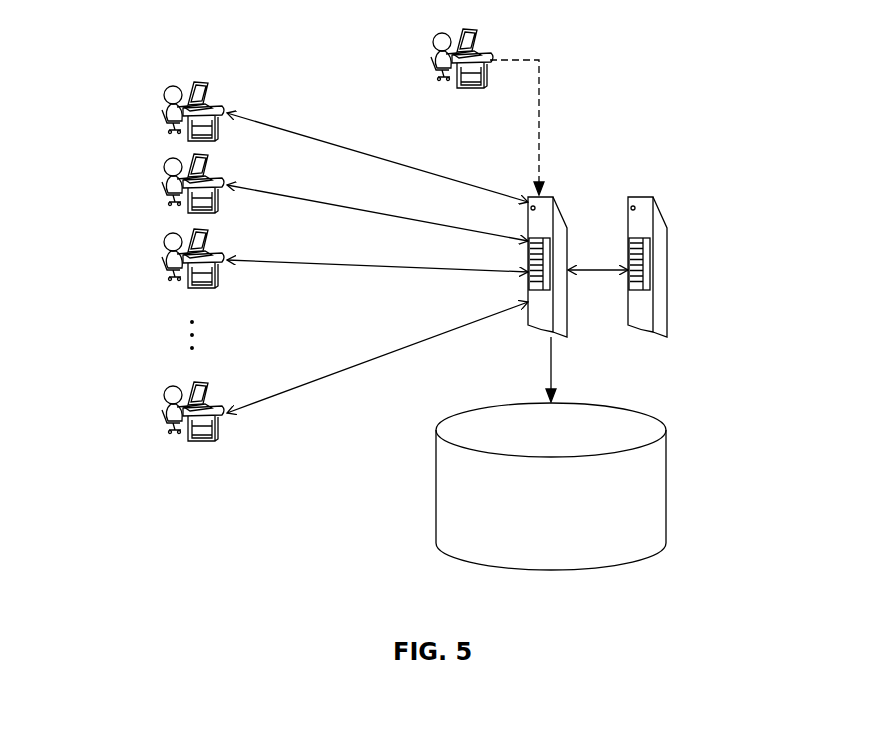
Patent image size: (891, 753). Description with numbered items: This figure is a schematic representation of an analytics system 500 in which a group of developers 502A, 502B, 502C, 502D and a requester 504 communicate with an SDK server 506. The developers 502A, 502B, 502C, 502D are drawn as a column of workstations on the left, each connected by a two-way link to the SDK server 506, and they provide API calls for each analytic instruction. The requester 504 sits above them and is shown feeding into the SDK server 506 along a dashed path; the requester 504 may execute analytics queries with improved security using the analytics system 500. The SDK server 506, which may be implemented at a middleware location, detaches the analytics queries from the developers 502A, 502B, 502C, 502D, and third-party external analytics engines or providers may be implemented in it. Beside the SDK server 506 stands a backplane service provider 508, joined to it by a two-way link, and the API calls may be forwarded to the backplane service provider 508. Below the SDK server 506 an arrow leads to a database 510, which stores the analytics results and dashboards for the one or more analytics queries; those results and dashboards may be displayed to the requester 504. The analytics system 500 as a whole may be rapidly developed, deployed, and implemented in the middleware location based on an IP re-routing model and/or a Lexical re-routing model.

The analytics system 500 is at (445, 325).
The developer 502A is at (165, 120).
The developer 502B is at (164, 190).
The developer 502C is at (164, 264).
The developer 502D is at (164, 415).
The requester 504 is at (432, 60).
The SDK server 506 is at (556, 199).
The backplane service provider 508 is at (656, 200).
The database 510 is at (667, 488).